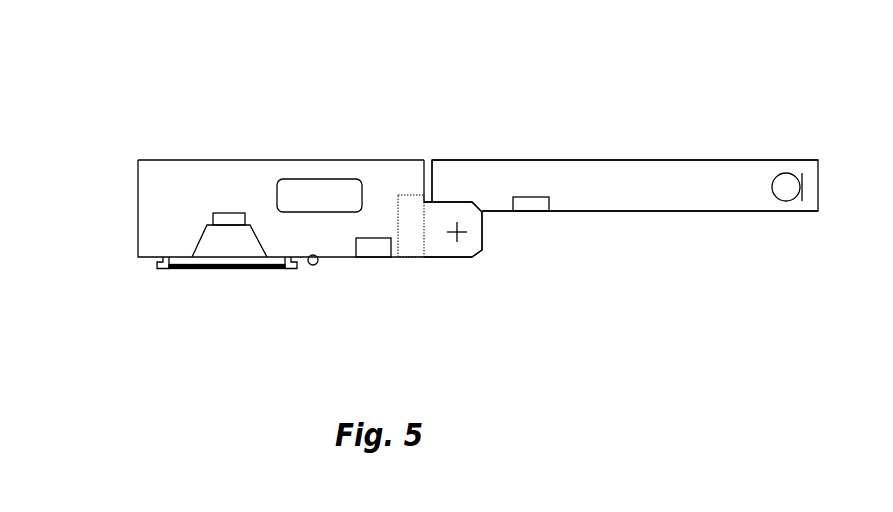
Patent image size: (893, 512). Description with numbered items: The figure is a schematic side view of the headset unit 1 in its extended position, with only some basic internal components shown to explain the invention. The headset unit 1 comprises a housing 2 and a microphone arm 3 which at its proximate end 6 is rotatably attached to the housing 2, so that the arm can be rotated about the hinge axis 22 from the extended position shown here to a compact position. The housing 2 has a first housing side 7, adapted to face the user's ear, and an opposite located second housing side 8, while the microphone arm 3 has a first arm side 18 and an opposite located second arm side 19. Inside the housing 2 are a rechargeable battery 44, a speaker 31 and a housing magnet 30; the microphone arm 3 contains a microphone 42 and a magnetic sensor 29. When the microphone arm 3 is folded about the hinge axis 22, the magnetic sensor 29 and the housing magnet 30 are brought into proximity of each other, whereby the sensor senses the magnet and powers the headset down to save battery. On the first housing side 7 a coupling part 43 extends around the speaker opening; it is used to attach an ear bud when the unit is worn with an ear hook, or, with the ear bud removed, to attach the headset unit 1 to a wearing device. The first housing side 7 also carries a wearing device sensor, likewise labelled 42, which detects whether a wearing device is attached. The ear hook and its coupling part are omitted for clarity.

The headset unit 1 is at (125, 92).
The housing 2 is at (240, 160).
The microphone arm 3 is at (627, 172).
The proximate end 6 is at (451, 175).
The first housing side 7 is at (146, 262).
The second housing side 8 is at (184, 160).
The first arm side 18 is at (688, 211).
The second arm side 19 is at (707, 167).
The hinge axis 22 is at (460, 238).
The magnetic sensor 29 is at (530, 211).
The housing magnet 30 is at (373, 250).
The speaker 31 is at (233, 245).
The microphone 42 is at (786, 190).
The coupling part 43 is at (177, 262).
The rechargeable battery 44 is at (313, 198).